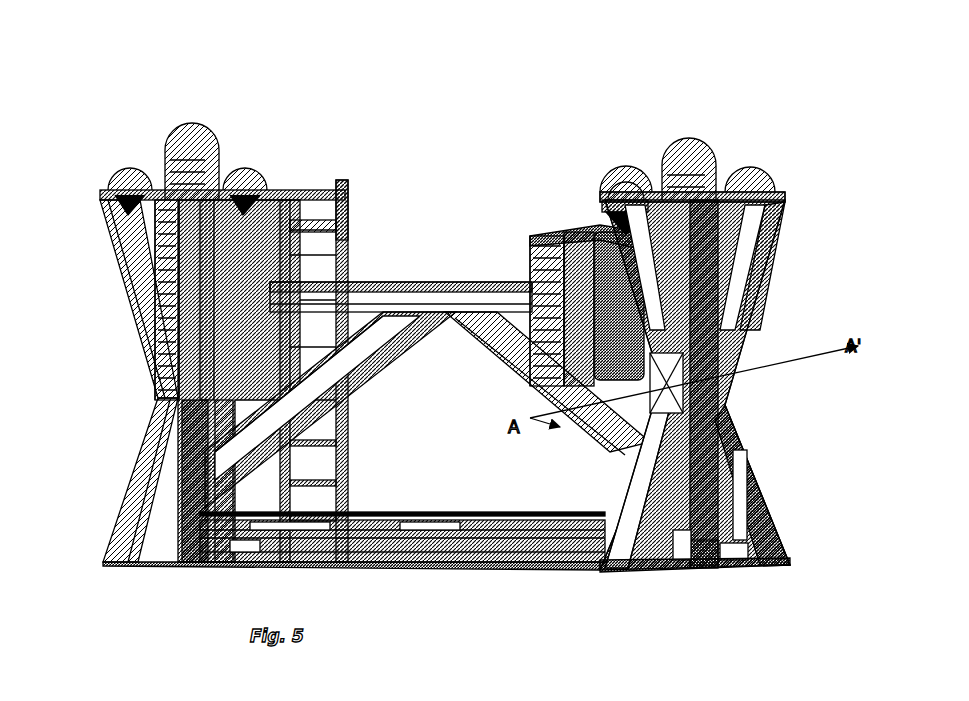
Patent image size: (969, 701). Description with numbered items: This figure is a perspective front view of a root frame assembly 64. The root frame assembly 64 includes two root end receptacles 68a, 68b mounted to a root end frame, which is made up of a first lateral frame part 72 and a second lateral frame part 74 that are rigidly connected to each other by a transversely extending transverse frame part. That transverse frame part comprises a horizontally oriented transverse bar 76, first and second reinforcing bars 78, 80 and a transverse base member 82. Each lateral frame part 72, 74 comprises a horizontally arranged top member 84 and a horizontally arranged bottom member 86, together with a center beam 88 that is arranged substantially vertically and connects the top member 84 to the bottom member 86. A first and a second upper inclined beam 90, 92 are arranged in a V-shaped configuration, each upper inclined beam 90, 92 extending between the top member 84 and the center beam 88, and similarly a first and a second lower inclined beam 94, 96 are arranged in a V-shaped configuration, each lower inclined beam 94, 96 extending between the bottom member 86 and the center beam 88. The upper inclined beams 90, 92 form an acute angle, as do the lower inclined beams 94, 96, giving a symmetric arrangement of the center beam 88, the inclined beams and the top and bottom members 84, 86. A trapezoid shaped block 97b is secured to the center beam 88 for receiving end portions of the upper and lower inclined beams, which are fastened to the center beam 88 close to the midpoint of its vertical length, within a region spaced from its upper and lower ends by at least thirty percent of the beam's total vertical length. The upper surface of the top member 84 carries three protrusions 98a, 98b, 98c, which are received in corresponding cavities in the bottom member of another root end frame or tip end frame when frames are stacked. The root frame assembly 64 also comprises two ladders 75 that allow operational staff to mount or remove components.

The root frame assembly 64 is at (392, 104).
The first lateral frame part 72 is at (92, 300).
The second lateral frame part 74 is at (800, 304).
The ladder 75 is at (348, 235).
The transverse bar 76 is at (428, 298).
The first reinforcing bar 78 is at (375, 350).
The second reinforcing bar 80 is at (492, 345).
The transverse base member 82 is at (470, 547).
The top member 84 is at (722, 190).
The bottom member 86 is at (742, 568).
The center beam 88 is at (716, 547).
The first upper inclined beam 90 is at (608, 222).
The second upper inclined beam 92 is at (762, 248).
The first lower inclined beam 94 is at (622, 548).
The second lower inclined beam 96 is at (748, 492).
The trapezoid shaped block 97b is at (668, 400).
The protrusion 98a is at (628, 188).
The protrusion 98b is at (677, 158).
The protrusion 98c is at (742, 187).
The root end receptacle 68a is at (172, 355).
The root end receptacle 68b is at (540, 278).